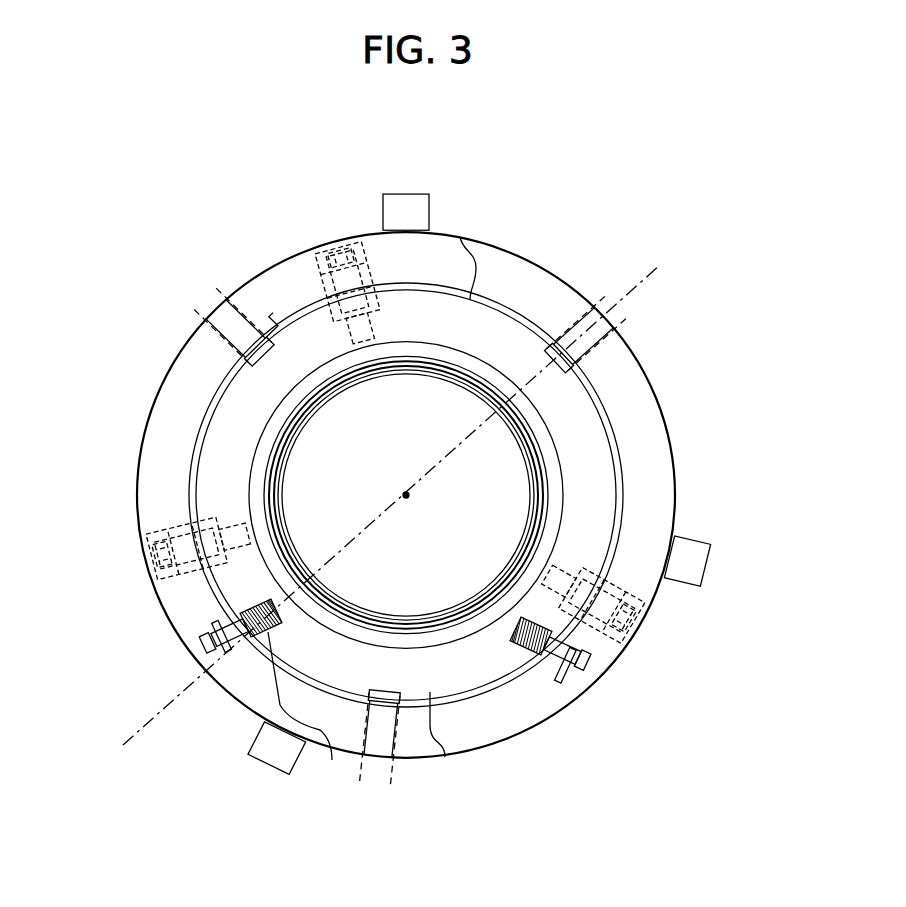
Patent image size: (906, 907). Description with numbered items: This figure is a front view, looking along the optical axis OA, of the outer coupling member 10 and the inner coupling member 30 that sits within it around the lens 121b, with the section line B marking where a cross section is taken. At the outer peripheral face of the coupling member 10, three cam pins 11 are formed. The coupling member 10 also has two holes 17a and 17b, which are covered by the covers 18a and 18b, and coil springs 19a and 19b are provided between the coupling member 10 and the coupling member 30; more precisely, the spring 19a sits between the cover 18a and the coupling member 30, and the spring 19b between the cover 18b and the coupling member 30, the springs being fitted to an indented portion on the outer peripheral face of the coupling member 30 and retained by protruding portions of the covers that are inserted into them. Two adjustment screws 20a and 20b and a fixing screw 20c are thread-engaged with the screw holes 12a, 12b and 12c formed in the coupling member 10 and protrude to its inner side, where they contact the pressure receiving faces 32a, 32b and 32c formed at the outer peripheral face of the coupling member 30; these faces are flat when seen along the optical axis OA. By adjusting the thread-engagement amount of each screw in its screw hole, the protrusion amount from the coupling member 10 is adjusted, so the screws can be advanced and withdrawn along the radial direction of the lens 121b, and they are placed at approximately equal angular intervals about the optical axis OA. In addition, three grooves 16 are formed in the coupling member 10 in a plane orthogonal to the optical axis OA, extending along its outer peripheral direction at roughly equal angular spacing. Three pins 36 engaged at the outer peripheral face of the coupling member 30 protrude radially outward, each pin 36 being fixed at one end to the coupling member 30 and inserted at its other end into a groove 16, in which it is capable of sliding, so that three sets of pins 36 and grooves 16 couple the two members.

The coupling member 10 is at (643, 360).
The cam pin 11 is at (405, 200).
The screw hole 12a is at (215, 306).
The screw hole 12b is at (591, 297).
The screw hole 12c is at (395, 788).
The groove 16 is at (312, 262).
The hole 17a is at (580, 688).
The hole 17b is at (228, 652).
The cover 18a is at (550, 690).
The cover 18b is at (243, 645).
The spring 19a is at (516, 648).
The spring 19b is at (332, 760).
The adjustment screw 20a is at (232, 298).
The adjustment screw 20b is at (612, 322).
The fixing screw 20c is at (365, 792).
The coupling member 30 is at (600, 465).
The pressure receiving face 32a is at (250, 355).
The pressure receiving face 32b is at (527, 333).
The pressure receiving face 32c is at (445, 757).
The pin 36 is at (350, 248).
The lens 121b is at (442, 410).
The optical axis OA is at (406, 495).
The section line B- B is at (657, 270).